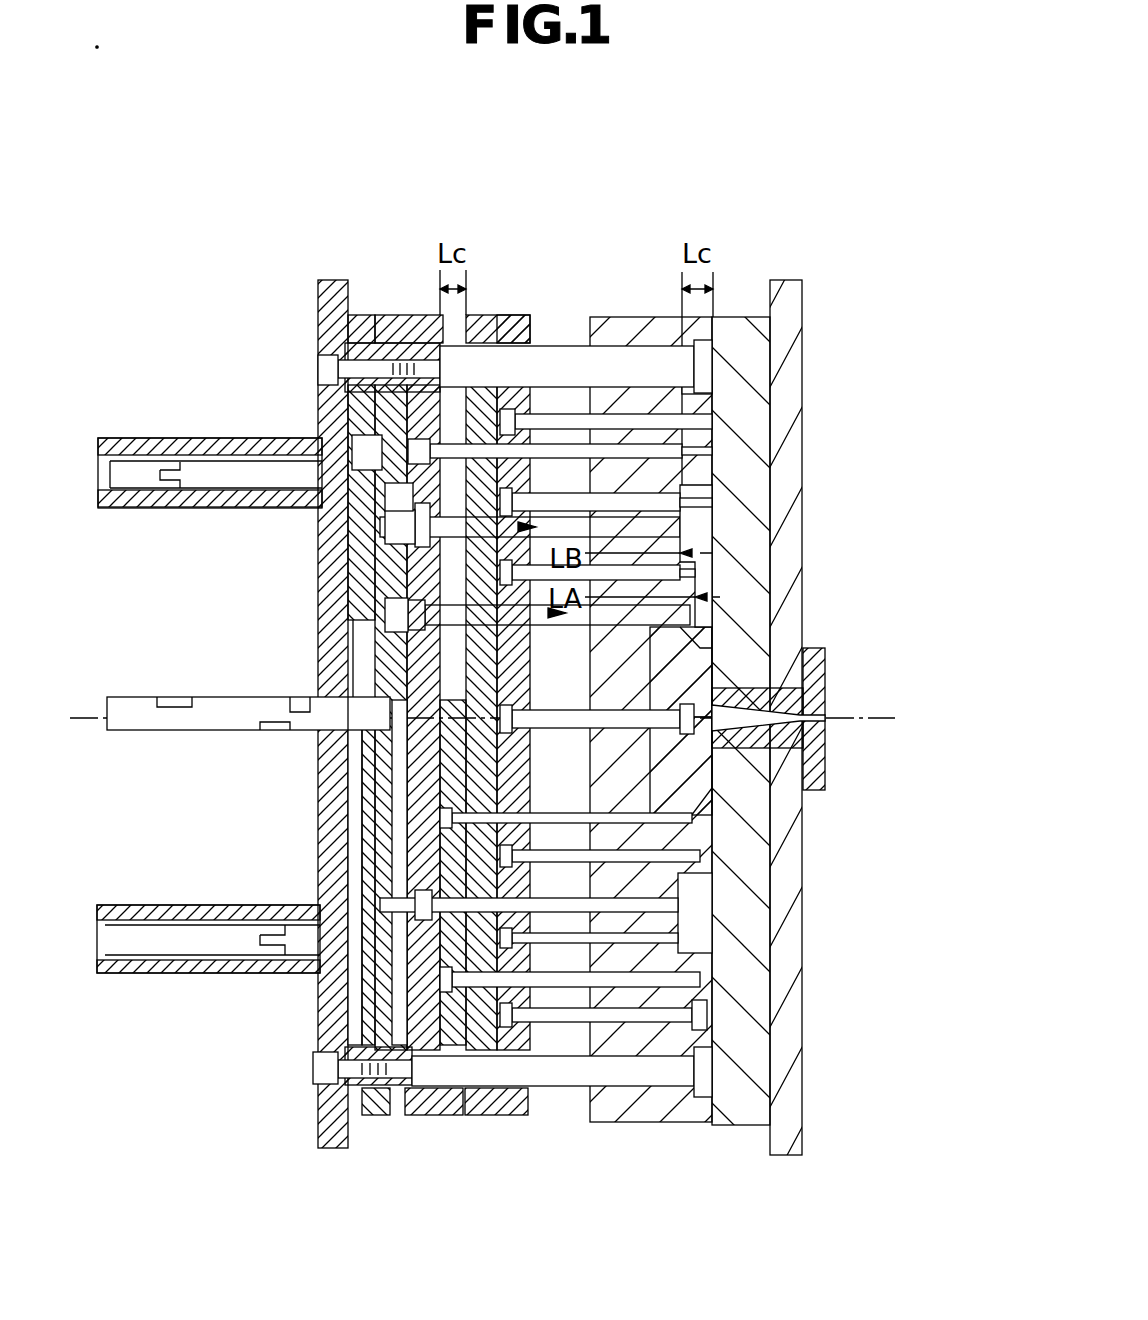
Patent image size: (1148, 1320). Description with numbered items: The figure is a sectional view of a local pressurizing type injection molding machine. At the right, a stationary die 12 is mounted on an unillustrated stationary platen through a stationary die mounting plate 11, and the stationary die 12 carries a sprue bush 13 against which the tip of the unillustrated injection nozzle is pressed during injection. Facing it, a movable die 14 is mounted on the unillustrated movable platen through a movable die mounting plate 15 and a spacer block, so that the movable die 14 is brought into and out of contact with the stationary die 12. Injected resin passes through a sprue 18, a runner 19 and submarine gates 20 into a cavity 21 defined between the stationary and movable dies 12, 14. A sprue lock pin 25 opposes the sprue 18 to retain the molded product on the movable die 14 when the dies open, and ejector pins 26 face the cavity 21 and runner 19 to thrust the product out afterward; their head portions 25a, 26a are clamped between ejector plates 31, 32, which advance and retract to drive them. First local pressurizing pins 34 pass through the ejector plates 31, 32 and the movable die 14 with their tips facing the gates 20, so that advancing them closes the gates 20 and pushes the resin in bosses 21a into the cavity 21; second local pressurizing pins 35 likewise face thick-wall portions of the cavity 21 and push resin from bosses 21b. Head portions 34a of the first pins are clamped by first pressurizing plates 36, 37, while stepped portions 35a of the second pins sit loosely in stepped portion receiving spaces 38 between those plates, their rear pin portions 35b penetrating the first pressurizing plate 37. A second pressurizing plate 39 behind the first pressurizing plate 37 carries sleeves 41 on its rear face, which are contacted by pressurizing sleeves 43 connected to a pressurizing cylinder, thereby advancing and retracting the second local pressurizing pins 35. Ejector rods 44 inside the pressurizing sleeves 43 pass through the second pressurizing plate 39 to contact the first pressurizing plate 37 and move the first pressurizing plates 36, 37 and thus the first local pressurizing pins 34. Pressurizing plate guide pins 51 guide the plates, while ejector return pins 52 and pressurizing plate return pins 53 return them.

The stationary die mounting plate 11 is at (790, 385).
The stationary die 12 is at (750, 360).
The sprue bush 13 is at (828, 690).
The movable die 14 is at (660, 1100).
The movable die mounting plate 15 is at (326, 1132).
The sprue 18 is at (815, 732).
The runner 19 is at (745, 655).
The submarine gates 20 is at (735, 640).
The cavity 21 is at (690, 530).
The bosses 21a is at (712, 600).
The bosses 21b is at (725, 480).
The sprue lock pin 25 is at (652, 736).
The head portion 25a is at (500, 730).
The ejector pins 26 is at (700, 856).
The head portions 26a is at (495, 855).
The ejector plate 31 is at (518, 315).
The ejector plate 32 is at (492, 315).
The first local pressurizing pins 34 is at (560, 612).
The head portions 34a is at (440, 603).
The second local pressurizing pins 35 is at (530, 522).
The stepped portions 35a is at (430, 520).
The rear pin portions 35b is at (400, 897).
The first pressurizing plate 36 is at (432, 343).
The first pressurizing plate 37 is at (392, 315).
The stepped portion receiving spaces 38 is at (400, 495).
The second pressurizing plate 39 is at (365, 315).
The sleeves 41 is at (330, 990).
The pressurizing sleeves 43 is at (215, 440).
The ejector rods 44 is at (150, 478).
The pressurizing plate guide pins 51 is at (555, 345).
The ejector return pins 52 is at (575, 1025).
The pressurizing plate return pins 53 is at (557, 990).